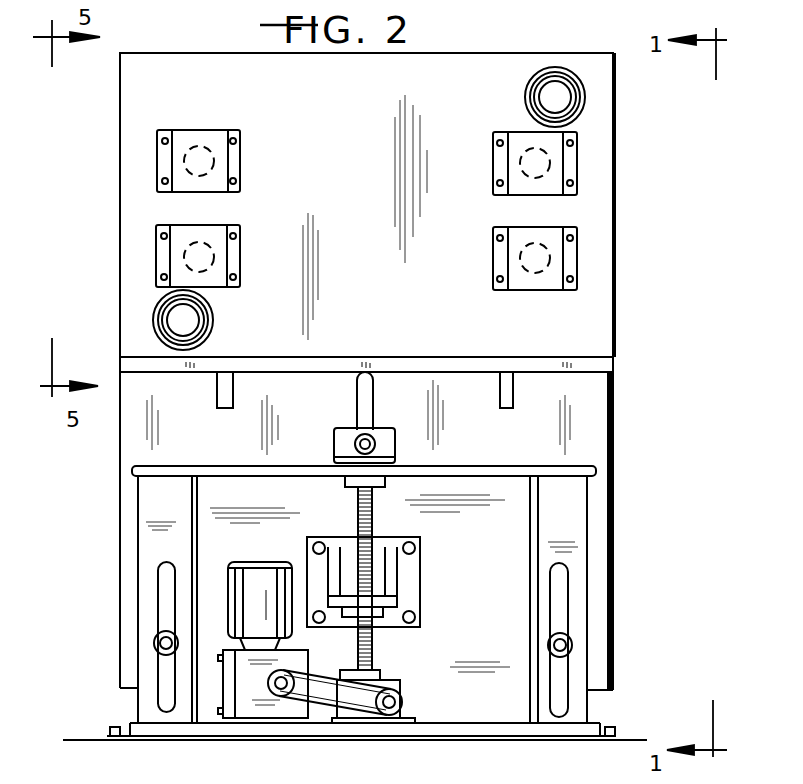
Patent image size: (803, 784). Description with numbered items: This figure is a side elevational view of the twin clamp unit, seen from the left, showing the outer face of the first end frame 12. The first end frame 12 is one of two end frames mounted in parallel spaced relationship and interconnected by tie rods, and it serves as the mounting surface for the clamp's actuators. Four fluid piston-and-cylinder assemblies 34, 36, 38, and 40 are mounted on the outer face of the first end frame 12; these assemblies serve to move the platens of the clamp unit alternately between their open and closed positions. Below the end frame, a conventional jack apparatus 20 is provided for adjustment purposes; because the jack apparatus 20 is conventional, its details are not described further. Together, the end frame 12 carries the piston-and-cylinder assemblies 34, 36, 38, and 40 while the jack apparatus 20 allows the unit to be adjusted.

The first end frame 12 is at (503, 53).
The jack apparatus 20 is at (397, 668).
The fluid piston-and-cylinder assembly 34 is at (577, 162).
The fluid piston-and-cylinder assembly 36 is at (577, 268).
The fluid piston-and-cylinder assembly 38 is at (240, 163).
The fluid piston-and-cylinder assembly 40 is at (156, 250).